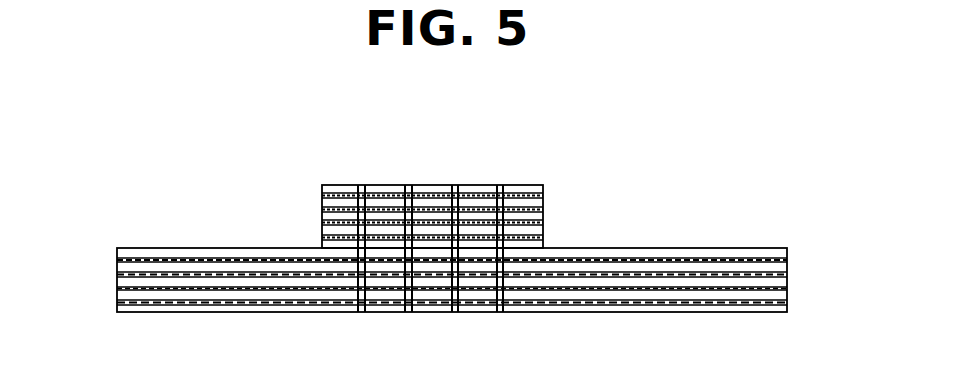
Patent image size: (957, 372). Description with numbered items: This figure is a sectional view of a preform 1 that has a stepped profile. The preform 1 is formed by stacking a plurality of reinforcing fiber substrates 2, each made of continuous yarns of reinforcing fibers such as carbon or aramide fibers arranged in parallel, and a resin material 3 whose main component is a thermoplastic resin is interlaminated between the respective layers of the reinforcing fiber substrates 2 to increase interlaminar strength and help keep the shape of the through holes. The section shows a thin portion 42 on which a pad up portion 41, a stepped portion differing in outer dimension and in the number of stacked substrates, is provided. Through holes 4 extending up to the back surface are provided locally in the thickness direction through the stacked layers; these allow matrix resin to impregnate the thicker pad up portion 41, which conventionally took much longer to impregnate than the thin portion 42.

The preform 1 is at (588, 235).
The reinforcing fiber substrate 2 is at (645, 253).
The resin material 3 is at (727, 258).
The through hole 4 is at (503, 187).
The pad up portion 41 is at (340, 180).
The thin portion 42 is at (210, 245).